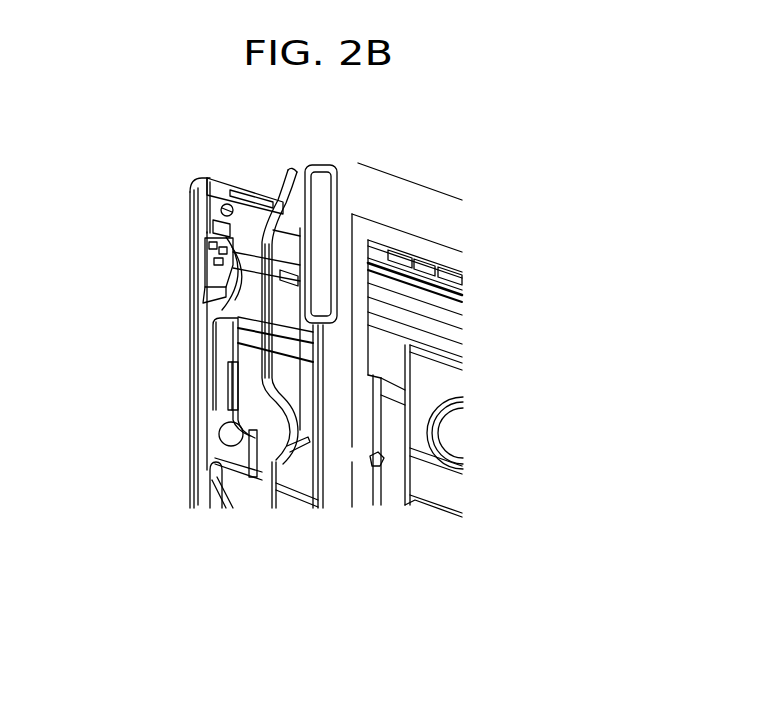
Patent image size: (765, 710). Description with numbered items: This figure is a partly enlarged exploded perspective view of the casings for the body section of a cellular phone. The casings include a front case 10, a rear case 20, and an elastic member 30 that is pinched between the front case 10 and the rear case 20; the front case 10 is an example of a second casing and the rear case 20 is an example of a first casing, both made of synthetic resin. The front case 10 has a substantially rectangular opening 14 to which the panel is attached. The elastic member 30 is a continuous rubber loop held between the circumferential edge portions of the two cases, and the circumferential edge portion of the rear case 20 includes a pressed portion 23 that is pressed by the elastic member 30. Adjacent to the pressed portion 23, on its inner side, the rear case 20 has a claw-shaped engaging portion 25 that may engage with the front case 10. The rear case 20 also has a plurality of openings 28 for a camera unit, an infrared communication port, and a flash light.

The front case 10 is at (352, 522).
The opening 14 is at (366, 286).
The rear case 20 is at (182, 304).
The pressed portion 23 is at (212, 240).
The engaging portion 25 is at (226, 394).
The openings 28 is at (250, 346).
The elastic member 30 is at (280, 173).